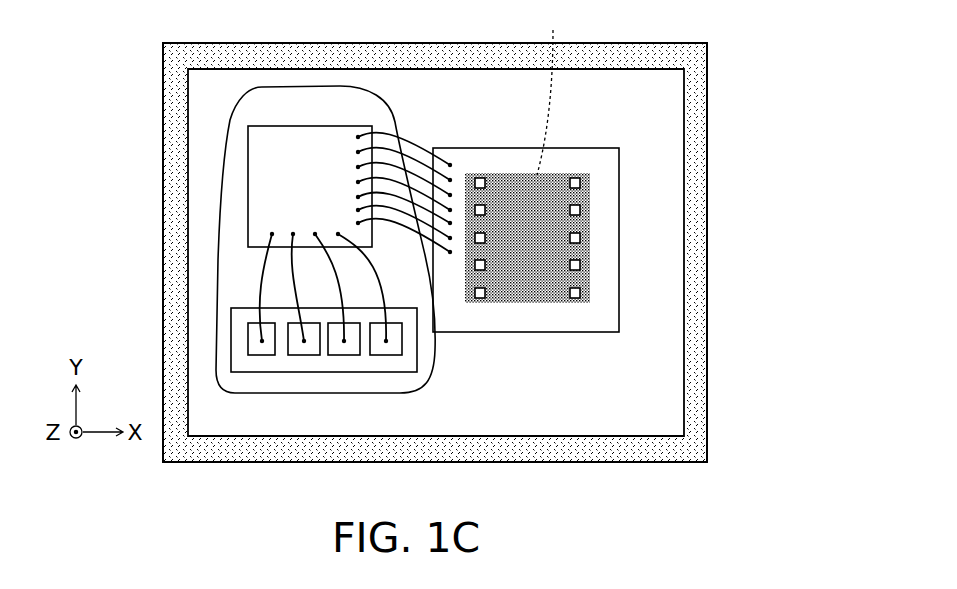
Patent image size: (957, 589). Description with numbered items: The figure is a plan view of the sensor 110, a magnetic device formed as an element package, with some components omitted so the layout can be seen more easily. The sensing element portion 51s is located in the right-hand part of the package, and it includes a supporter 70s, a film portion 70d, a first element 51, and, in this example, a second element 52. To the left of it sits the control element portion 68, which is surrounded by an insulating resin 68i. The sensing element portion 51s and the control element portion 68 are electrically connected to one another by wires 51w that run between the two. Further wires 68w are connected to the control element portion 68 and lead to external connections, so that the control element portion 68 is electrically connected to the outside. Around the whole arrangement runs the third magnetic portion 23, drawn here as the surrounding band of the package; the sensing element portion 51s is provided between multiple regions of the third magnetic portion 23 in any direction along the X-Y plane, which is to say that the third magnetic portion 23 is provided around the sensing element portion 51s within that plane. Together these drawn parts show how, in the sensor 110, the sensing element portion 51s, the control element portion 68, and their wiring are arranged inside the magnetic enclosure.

The sensor 110 is at (741, 73).
The third magnetic portion 23 is at (697, 115).
The first element 51 is at (575, 300).
The sensing element portion 51s is at (620, 192).
The wires 51w is at (420, 235).
The second element 52 is at (486, 300).
The control element portion 68 is at (270, 170).
The insulating resin 68i is at (237, 265).
The wires 68w is at (303, 284).
The film portion 70d is at (548, 89).
The supporter 70s is at (607, 288).